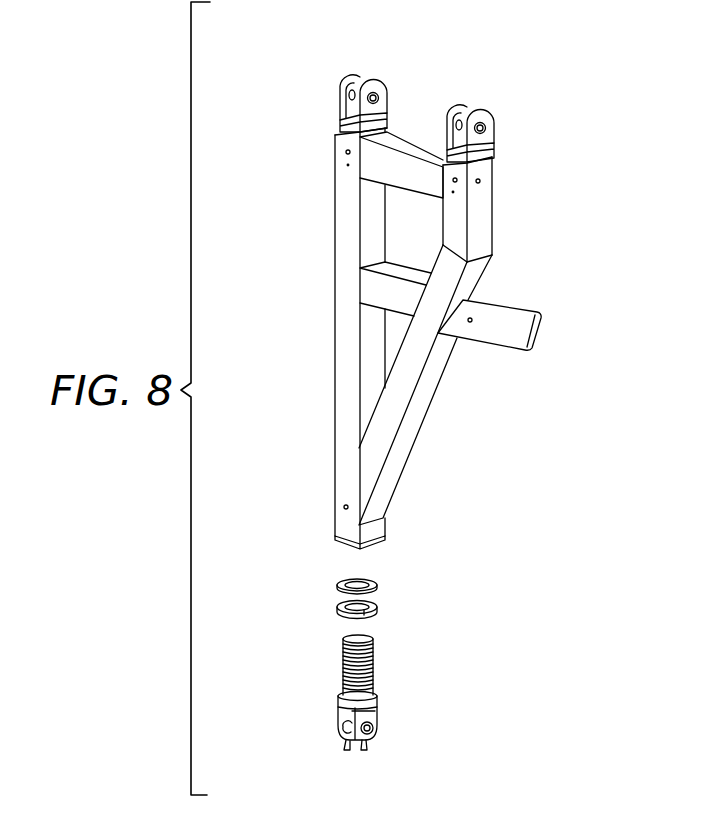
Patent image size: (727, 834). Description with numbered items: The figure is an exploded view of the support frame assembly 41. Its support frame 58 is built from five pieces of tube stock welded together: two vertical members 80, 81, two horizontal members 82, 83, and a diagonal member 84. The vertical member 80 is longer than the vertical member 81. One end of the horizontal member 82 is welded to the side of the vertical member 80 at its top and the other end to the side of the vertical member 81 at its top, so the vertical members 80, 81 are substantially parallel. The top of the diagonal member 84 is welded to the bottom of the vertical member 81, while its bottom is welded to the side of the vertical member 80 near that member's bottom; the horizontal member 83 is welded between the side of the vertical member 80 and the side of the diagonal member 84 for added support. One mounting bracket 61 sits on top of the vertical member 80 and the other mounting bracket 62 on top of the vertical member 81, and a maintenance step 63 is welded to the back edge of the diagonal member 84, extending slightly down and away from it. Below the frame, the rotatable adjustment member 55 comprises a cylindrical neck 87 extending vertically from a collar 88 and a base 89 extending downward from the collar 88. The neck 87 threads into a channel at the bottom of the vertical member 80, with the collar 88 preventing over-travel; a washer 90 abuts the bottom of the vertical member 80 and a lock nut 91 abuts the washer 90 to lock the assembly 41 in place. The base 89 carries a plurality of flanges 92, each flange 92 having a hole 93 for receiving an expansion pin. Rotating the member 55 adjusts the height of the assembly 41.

The support frame assembly 41 is at (312, 56).
The support frame 58 is at (333, 165).
The mounting bracket 61 is at (389, 90).
The mounting bracket 62 is at (494, 116).
The vertical member 80 is at (333, 371).
The vertical member 81 is at (480, 211).
The horizontal member 82 is at (410, 178).
The horizontal member 83 is at (370, 290).
The diagonal member 84 is at (398, 400).
The maintenance step 63 is at (505, 317).
The washer 90 is at (377, 585).
The lock nut 91 is at (382, 610).
The cylindrical neck 87 is at (343, 655).
The collar 88 is at (343, 700).
The base 89 is at (335, 727).
The rotatable adjustment member 55 is at (380, 702).
The hole 93 is at (373, 728).
The flanges 92 is at (347, 749).